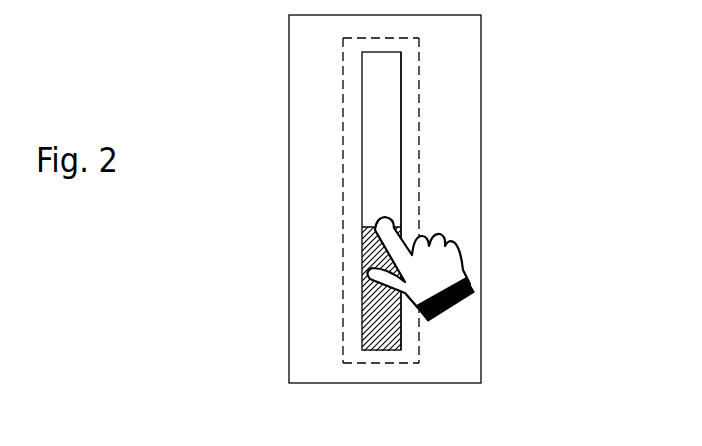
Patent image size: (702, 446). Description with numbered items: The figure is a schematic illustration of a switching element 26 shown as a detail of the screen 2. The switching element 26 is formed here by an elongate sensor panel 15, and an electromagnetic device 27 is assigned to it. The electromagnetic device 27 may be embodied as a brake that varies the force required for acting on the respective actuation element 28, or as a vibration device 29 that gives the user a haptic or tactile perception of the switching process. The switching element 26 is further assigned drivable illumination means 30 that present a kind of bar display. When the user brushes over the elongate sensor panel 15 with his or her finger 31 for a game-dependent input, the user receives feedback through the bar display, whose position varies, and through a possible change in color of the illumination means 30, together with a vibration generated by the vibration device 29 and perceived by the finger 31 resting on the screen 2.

The screen 2 is at (319, 171).
The sensor panel 15 is at (392, 163).
The switching element 26 is at (362, 112).
The electromagnetic device 27 is at (425, 177).
The actuation element 28 is at (404, 112).
The vibration device 29 is at (412, 62).
The illumination means 30 is at (394, 340).
The finger 31 is at (388, 228).